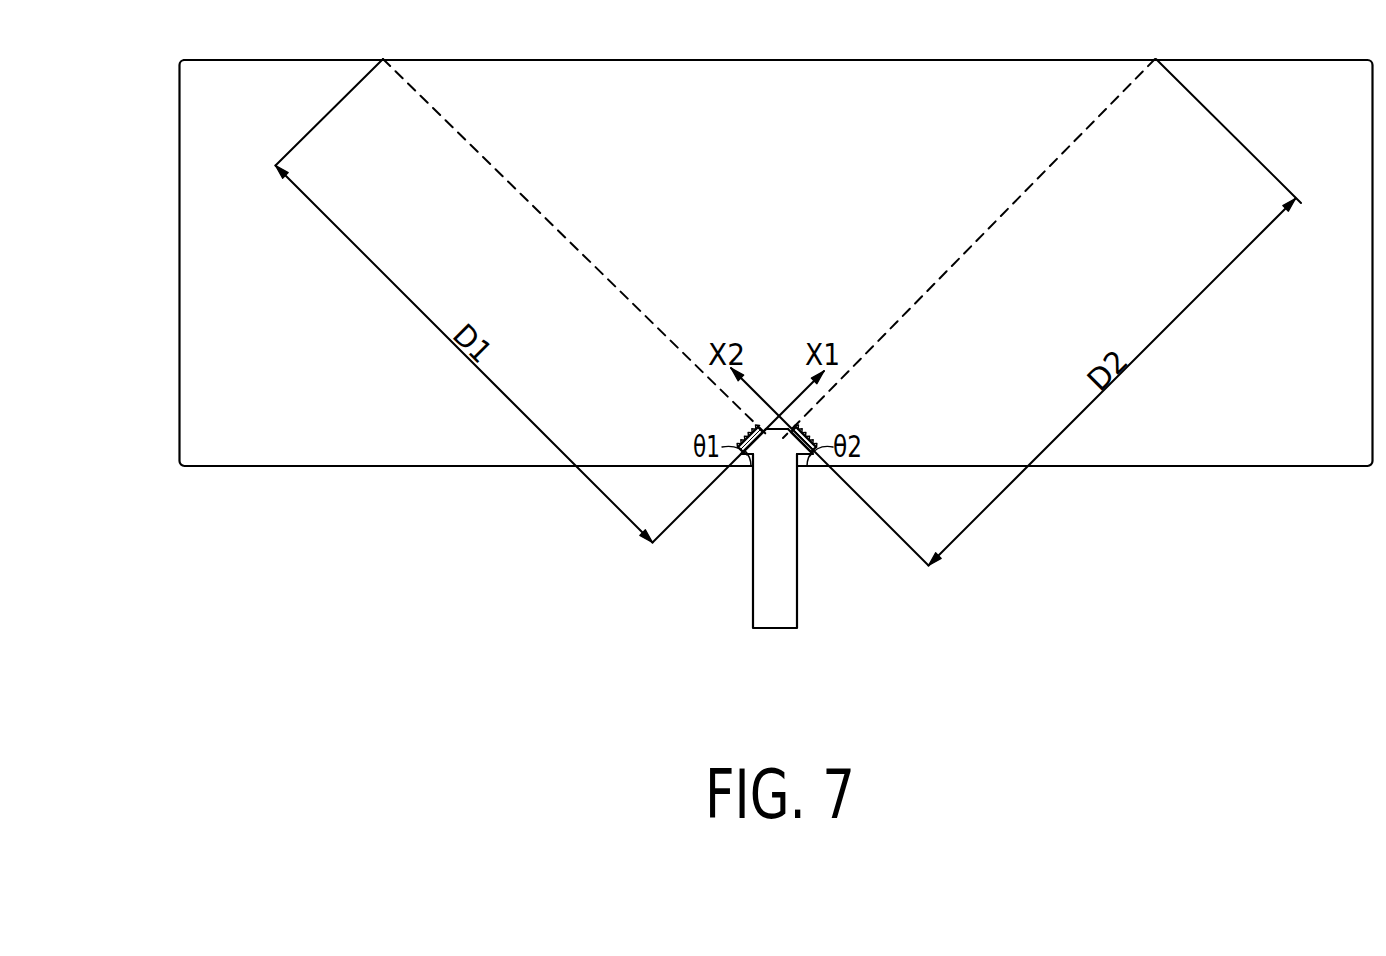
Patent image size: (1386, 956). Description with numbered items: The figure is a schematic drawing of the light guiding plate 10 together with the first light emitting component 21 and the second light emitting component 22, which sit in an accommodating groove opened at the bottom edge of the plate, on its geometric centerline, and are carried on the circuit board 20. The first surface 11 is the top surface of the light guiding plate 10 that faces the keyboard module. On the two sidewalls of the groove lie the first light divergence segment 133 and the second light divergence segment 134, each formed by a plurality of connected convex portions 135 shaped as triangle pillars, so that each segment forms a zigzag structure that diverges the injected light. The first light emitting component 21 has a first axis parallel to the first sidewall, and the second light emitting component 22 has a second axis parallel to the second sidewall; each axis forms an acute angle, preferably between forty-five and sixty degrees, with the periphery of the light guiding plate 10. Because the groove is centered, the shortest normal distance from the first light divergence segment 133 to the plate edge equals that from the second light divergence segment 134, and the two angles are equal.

The light guiding plate 10 is at (193, 128).
The first surface 11 is at (198, 233).
The circuit board 20 is at (785, 575).
The first light emitting component 21 is at (748, 466).
The second light emitting component 22 is at (805, 466).
The first light divergence segment 133 is at (747, 430).
The second light divergence segment 134 is at (808, 428).
The convex portion 135 is at (783, 423).